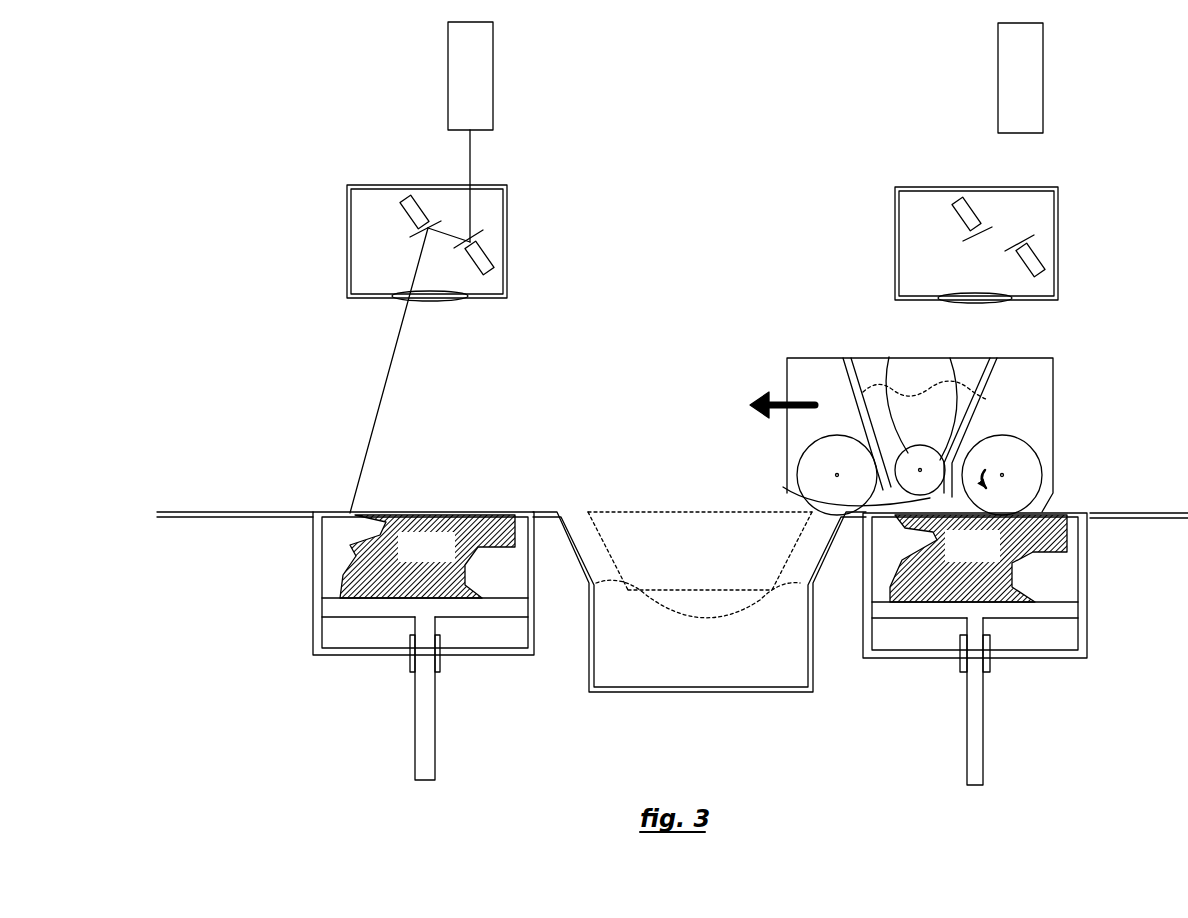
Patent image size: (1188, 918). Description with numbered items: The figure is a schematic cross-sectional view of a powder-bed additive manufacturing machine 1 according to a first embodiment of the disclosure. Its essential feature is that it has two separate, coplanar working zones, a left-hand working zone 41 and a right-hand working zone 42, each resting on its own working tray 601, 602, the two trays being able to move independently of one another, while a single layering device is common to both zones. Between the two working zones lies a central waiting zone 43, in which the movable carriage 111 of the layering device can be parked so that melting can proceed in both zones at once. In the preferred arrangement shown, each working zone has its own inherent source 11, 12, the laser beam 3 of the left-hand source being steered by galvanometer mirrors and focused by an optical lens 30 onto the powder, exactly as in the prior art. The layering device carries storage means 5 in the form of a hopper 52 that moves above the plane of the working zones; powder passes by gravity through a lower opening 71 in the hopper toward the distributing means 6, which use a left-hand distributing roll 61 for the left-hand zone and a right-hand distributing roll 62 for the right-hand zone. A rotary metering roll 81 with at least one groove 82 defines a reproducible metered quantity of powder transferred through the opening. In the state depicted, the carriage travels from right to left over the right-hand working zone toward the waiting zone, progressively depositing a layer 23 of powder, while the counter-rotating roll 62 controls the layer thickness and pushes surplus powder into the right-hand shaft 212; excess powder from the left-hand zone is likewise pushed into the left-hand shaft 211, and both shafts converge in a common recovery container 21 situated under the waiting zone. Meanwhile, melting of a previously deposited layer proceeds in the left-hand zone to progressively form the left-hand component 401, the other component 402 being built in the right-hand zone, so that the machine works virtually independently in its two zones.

The machine 1 is at (275, 300).
The laser beam 3 is at (383, 392).
The storage means 5 is at (838, 334).
The distributing means 6 is at (1088, 432).
The source 11 is at (465, 72).
The source 12 is at (1013, 70).
The recovery container 21 is at (682, 692).
The layer 23 is at (1063, 512).
The optical lens 30 is at (434, 298).
The left-hand working zone 41 is at (459, 485).
The right-hand working zone 42 is at (1067, 483).
The central waiting zone 43 is at (657, 494).
The hopper 52 is at (853, 373).
The left-hand distributing roll 61 is at (808, 477).
The right-hand distributing roll 62 is at (1025, 460).
The lower opening 71 is at (920, 496).
The rotary metering roll 81 is at (895, 394).
The groove 82 is at (950, 358).
The movable carriage 111 is at (1033, 378).
The shaft 211 is at (585, 538).
The shaft 212 is at (813, 540).
The left-hand component 401 is at (427, 556).
The component 402 is at (978, 558).
The working tray 601 is at (465, 607).
The working tray 602 is at (994, 606).